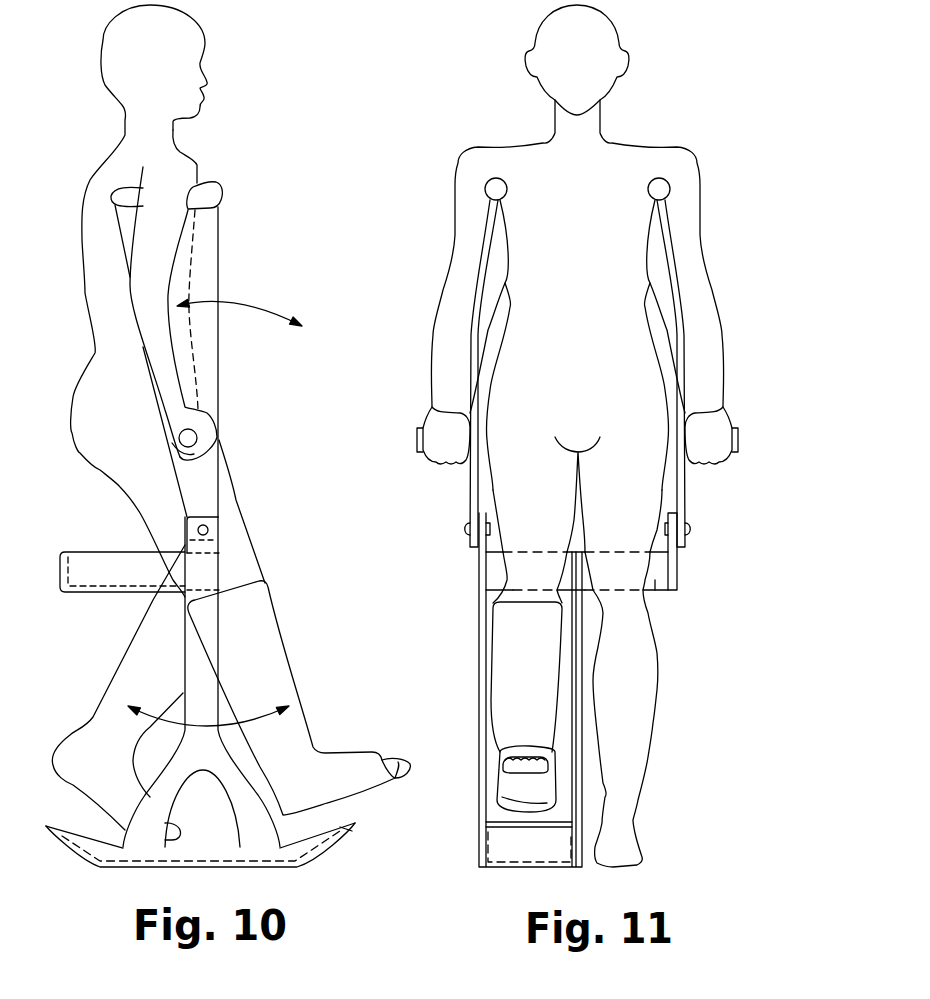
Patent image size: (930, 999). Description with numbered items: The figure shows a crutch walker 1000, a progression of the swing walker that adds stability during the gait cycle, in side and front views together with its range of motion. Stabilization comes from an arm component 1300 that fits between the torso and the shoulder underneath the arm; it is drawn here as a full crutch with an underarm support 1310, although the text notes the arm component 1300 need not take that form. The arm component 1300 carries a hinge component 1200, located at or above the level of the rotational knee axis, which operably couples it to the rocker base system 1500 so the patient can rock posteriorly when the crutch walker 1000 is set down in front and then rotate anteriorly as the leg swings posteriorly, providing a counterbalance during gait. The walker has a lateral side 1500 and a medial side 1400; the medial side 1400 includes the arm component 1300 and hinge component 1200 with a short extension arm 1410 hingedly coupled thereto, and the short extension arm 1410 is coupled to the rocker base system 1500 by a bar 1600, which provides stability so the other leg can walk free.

In FIG. 10, the crutch walker 1000 is at (262, 468).
In FIG. 11, the crutch walker 1000 is at (713, 547).
In FIG. 10, the hinge component 1200 is at (207, 534).
In FIG. 11, the hinge component 1200 is at (466, 530).
In FIG. 10, the arm component 1300 is at (212, 233).
In FIG. 11, the arm component 1300 is at (668, 290).
In FIG. 10, the underarm support 1310 is at (215, 186).
In FIG. 11, the underarm support 1310 is at (661, 187).
In FIG. 11, the medial side 1400 is at (684, 577).
In FIG. 11, the short extension arm 1410 is at (674, 567).
In FIG. 10, the rocker base system 1500 is at (197, 657).
In FIG. 11, the rocker base system 1500 is at (478, 640).
In FIG. 11, the bar 1600 is at (655, 590).